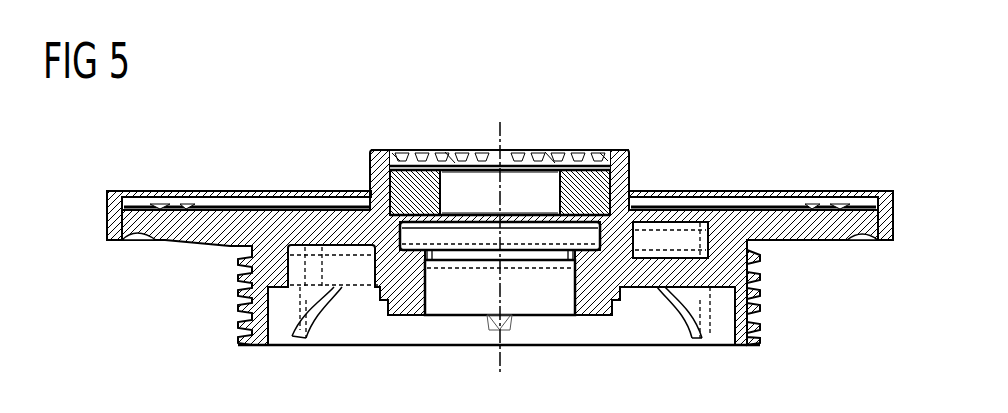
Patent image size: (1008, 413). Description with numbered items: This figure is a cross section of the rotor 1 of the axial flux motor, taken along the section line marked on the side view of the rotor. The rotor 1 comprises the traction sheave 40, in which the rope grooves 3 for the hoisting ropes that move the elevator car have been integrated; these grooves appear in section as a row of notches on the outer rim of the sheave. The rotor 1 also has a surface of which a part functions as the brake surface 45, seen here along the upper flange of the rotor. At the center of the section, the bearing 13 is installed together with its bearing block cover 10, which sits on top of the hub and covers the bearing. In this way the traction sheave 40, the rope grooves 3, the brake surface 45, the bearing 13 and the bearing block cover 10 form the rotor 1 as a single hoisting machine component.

The rotor 1 is at (878, 372).
The rope grooves 3 is at (767, 250).
The bearing block cover 10 is at (598, 150).
The bearing 13 is at (604, 182).
The traction sheave 40 is at (205, 234).
The brake surface 45 is at (107, 208).